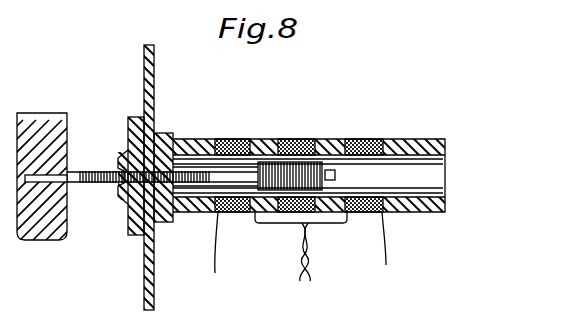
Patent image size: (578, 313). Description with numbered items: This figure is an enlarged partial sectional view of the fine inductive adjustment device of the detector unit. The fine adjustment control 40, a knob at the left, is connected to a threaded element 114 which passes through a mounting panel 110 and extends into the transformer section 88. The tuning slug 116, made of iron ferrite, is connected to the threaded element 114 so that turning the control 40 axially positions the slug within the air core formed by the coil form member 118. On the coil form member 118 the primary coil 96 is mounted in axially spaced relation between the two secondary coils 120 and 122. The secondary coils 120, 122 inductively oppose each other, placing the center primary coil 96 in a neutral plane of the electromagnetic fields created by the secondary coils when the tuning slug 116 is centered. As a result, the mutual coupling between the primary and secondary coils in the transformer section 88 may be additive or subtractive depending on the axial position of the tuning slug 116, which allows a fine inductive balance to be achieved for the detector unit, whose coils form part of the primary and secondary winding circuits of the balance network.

The fine adjustment control 40 is at (38, 111).
The mounting wall / panel 110 is at (143, 64).
The threaded element 114 is at (105, 185).
The coil form member 118 is at (192, 139).
The secondary coil 120 is at (234, 139).
The primary coil 96 is at (291, 139).
The transformer section 88 is at (289, 156).
The secondary coil 122 is at (361, 139).
The tuning slug 116 is at (336, 186).